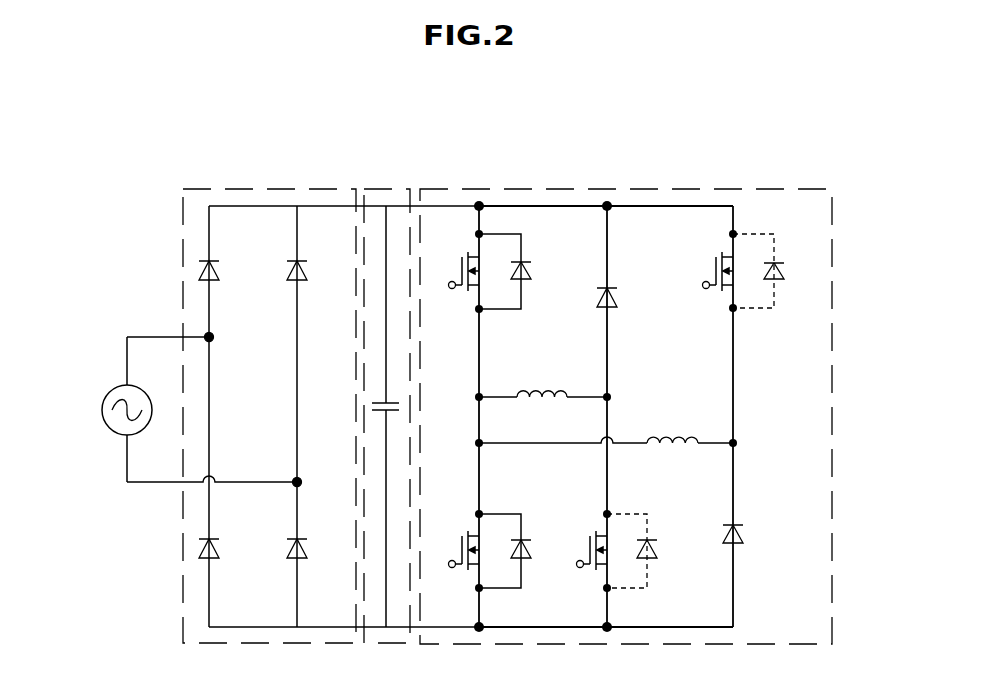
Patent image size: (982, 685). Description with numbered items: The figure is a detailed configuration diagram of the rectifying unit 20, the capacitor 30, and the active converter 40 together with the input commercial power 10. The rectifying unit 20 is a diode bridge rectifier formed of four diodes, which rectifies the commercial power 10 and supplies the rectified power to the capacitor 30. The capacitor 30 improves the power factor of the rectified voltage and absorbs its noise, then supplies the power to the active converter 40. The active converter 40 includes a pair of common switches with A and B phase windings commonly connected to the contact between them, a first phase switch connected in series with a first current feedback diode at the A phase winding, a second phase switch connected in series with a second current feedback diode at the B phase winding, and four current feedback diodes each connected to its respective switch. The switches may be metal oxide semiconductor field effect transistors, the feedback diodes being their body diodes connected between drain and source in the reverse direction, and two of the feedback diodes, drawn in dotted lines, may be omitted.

The commercial power 10 is at (137, 386).
The rectifying unit 20 is at (245, 188).
The capacitor 30 is at (378, 188).
The active converter 40 is at (512, 188).